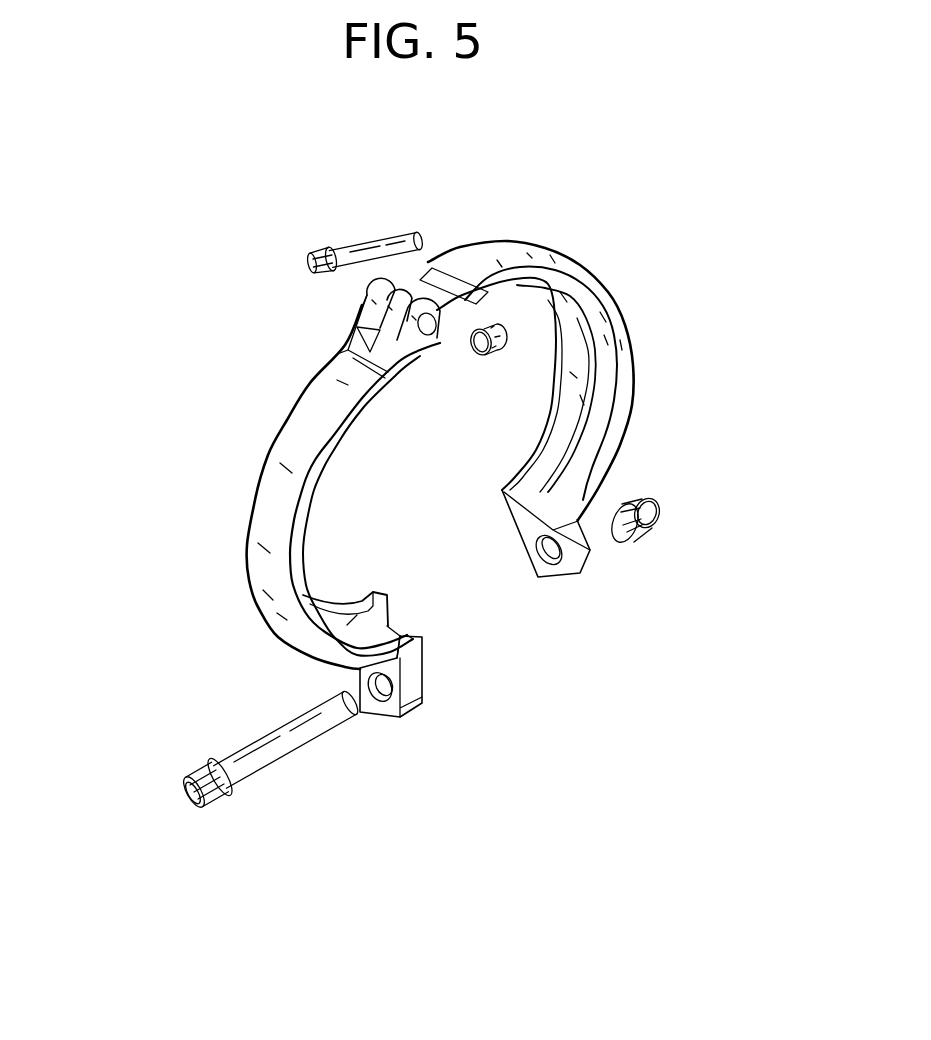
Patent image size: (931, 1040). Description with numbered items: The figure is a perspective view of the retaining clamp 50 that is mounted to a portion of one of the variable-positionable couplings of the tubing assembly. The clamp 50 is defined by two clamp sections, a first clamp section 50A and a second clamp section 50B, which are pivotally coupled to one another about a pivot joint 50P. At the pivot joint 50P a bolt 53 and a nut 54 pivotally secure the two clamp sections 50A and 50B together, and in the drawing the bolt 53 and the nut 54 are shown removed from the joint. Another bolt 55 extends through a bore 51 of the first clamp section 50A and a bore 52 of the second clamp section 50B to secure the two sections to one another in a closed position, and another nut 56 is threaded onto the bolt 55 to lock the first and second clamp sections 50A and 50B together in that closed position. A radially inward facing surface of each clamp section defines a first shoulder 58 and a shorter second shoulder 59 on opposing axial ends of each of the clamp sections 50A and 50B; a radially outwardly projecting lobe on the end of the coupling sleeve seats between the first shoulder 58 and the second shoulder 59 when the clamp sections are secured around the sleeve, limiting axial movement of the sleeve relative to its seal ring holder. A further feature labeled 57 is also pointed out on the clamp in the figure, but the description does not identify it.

The retaining clamp 50 is at (590, 197).
The first clamp section 50A is at (262, 448).
The second clamp section 50B is at (628, 311).
The pivot joint 50P is at (426, 328).
The bore 51 is at (390, 688).
The bore 52 is at (552, 560).
The bolt 53 is at (366, 234).
The nut 54 is at (479, 370).
The bolt 55 is at (288, 764).
The nut 56 is at (658, 532).
The lug end face 57 is at (396, 633).
The first shoulder 58 is at (352, 618).
The second shoulder 59 is at (583, 457).